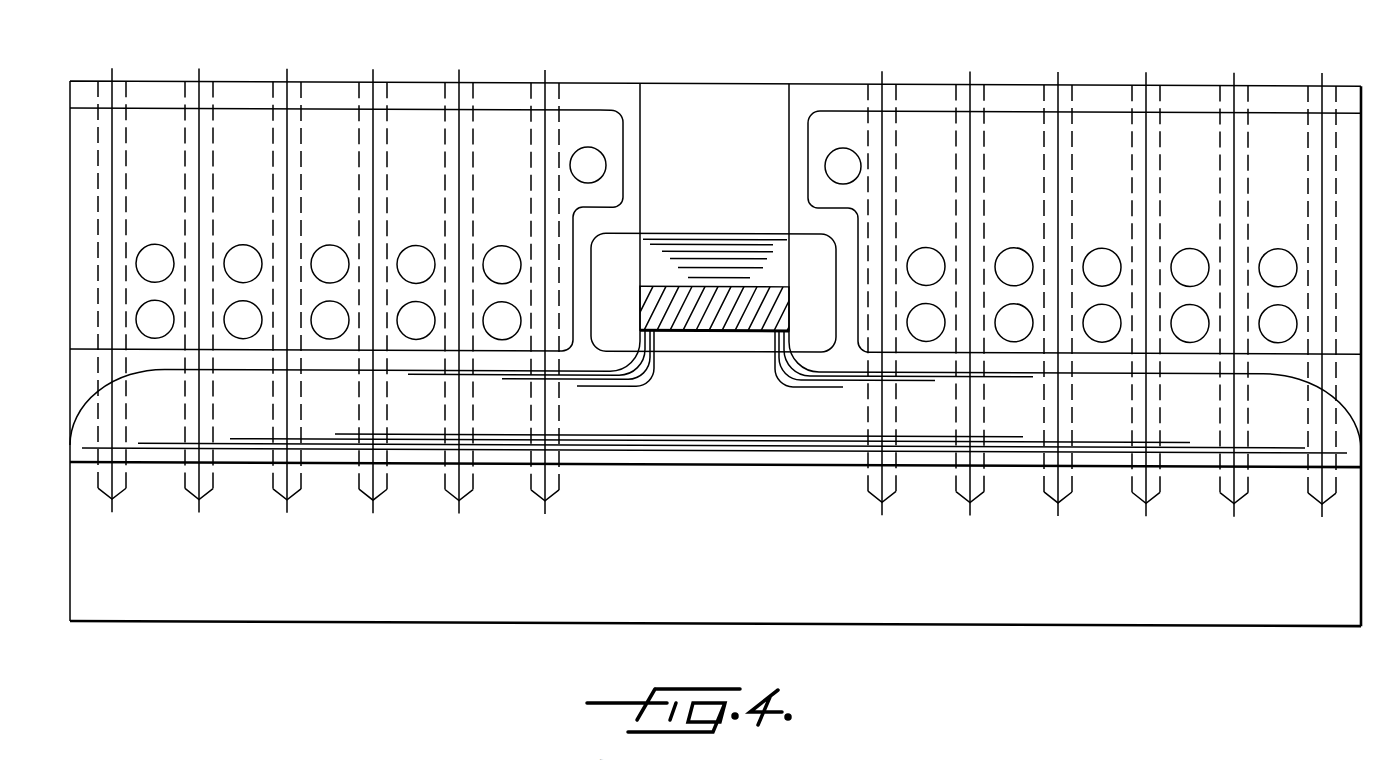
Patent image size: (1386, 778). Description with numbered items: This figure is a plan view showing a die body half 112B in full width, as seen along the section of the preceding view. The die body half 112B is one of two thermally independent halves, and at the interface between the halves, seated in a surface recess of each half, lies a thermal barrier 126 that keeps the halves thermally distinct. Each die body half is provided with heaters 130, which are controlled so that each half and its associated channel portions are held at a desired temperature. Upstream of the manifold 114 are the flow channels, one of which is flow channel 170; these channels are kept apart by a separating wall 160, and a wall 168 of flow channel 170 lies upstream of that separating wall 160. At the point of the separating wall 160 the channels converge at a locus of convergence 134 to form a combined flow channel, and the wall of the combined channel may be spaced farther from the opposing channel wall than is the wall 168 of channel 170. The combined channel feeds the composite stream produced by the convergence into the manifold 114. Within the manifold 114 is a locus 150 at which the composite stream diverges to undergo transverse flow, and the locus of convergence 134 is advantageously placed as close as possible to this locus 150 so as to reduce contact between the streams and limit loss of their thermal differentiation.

The die body half 112B is at (337, 72).
The thermal barrier 126 is at (586, 119).
The heaters 130 is at (270, 212).
The flow channel 170 is at (731, 96).
The wall of channel 168 is at (704, 204).
The separating wall 160 is at (730, 295).
The locus of convergence 134 is at (703, 337).
The locus 150 is at (700, 380).
The manifold 114 is at (645, 421).